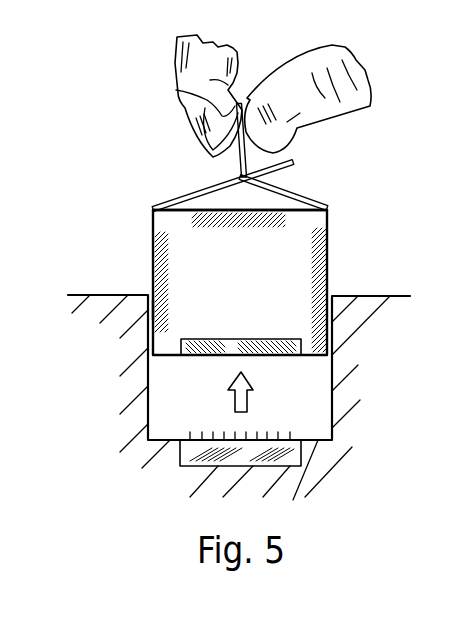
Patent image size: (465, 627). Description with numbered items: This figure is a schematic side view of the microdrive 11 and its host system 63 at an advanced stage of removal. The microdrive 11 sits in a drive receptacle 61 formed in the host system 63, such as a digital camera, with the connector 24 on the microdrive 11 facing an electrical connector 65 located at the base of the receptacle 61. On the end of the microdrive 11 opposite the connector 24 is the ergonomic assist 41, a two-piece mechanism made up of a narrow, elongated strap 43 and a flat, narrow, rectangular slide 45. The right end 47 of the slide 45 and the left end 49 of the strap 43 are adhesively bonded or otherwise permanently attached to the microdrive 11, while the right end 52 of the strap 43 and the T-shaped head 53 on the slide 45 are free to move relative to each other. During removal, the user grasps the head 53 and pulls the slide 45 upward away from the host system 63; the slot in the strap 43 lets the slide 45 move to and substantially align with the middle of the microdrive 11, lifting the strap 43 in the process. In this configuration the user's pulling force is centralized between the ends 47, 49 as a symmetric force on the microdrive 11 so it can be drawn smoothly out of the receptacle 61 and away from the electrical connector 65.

The microdrive 11 is at (254, 276).
The connector 24 is at (227, 348).
The ergonomic assist 41 is at (260, 162).
The strap 43 is at (196, 194).
The slide 45 is at (240, 172).
The right end of slide 47 is at (328, 209).
The left end of strap 49 is at (153, 208).
The right end of strap 52 is at (286, 160).
The T-shaped head 53 is at (176, 92).
The drive receptacle 61 is at (153, 307).
The host system 63 is at (114, 288).
The electrical connector 65 is at (296, 452).